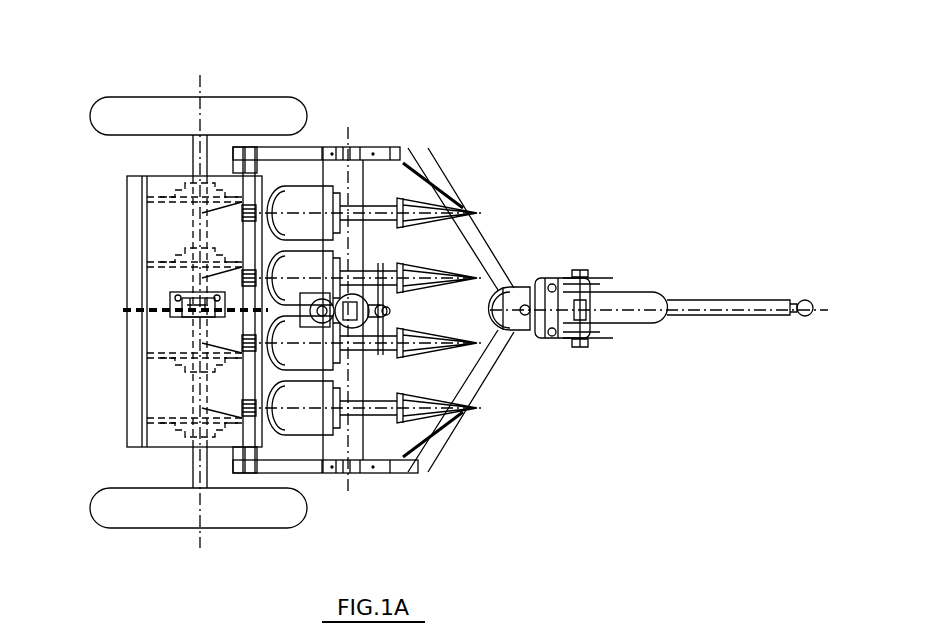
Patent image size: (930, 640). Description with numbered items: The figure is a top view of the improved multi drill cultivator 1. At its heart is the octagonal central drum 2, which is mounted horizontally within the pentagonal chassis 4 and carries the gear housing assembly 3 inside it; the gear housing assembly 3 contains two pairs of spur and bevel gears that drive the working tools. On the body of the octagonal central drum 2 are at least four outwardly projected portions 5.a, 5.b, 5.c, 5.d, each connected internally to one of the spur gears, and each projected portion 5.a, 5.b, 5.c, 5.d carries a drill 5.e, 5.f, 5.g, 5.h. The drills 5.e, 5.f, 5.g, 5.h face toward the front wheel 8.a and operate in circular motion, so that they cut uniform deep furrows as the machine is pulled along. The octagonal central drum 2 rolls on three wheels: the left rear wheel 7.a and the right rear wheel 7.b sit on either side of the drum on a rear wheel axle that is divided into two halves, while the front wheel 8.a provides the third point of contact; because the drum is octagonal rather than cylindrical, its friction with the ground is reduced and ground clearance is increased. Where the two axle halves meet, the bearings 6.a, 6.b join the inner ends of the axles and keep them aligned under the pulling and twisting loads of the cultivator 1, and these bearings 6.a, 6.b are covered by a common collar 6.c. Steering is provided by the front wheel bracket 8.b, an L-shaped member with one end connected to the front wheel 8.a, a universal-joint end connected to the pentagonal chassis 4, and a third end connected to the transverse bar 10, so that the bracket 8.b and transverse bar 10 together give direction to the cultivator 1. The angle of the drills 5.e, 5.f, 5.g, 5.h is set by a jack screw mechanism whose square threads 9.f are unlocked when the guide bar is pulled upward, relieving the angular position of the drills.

The multi drill cultivator 1 is at (430, 301).
The octagonal central drum 2 is at (147, 310).
The gear housing assembly 3 is at (144, 310).
The pentagonal chassis 4 is at (358, 123).
The projected portion 5.a is at (432, 155).
The projected portion 5.b is at (433, 239).
The projected portion 5.c is at (432, 375).
The projected portion 5.d is at (433, 456).
The drill 5.e is at (420, 174).
The drill 5.f is at (421, 258).
The drill 5.g is at (419, 358).
The drill 5.h is at (419, 437).
The bearing 6.a is at (128, 290).
The bearing 6.b is at (211, 340).
The common collar 6.c is at (150, 321).
The left rear wheel 7.a is at (189, 82).
The right rear wheel 7.b is at (198, 545).
The front wheel 8.a is at (642, 273).
The front wheel bracket 8.b is at (626, 256).
The square threads 9.f is at (339, 497).
The transverse bar 10 is at (740, 277).